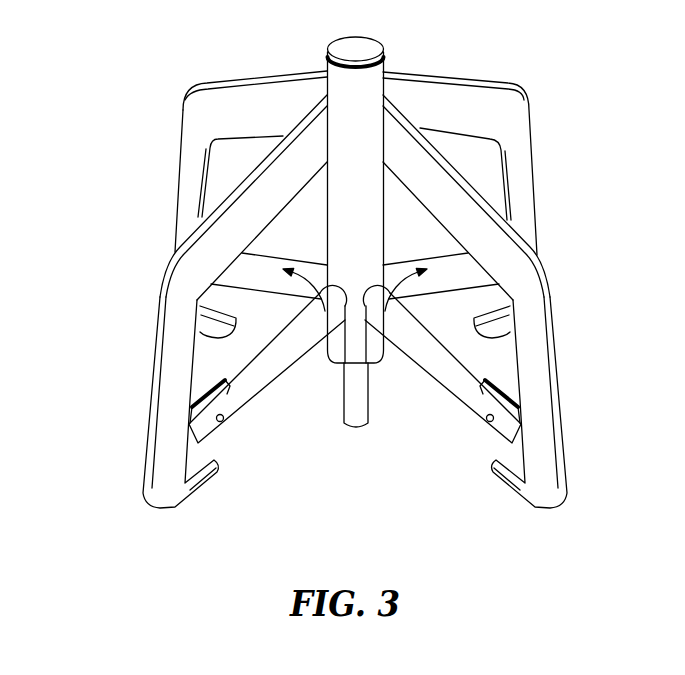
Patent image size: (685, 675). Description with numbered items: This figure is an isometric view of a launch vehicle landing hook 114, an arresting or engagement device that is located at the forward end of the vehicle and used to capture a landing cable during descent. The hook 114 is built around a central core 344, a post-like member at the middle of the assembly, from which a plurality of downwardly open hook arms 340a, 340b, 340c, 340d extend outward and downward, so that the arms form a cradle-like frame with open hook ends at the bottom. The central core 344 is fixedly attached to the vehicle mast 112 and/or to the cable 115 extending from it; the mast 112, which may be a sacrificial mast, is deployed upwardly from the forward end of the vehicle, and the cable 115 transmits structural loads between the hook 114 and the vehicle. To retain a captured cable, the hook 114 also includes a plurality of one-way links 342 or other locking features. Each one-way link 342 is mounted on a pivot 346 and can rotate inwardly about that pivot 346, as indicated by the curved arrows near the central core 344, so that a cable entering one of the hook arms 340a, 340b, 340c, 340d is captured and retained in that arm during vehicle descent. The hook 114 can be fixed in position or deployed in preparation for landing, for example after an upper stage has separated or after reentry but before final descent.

The hook arm 340a is at (558, 383).
The hook arm 340b is at (488, 84).
The hook arm 340c is at (228, 84).
The hook arm 340d is at (154, 383).
The hook 114 is at (533, 307).
The central core 344 is at (350, 242).
The one-way link 342 is at (444, 383).
The pivot 346 is at (488, 422).
The cable 115 is at (321, 415).
The mast 112 is at (344, 407).